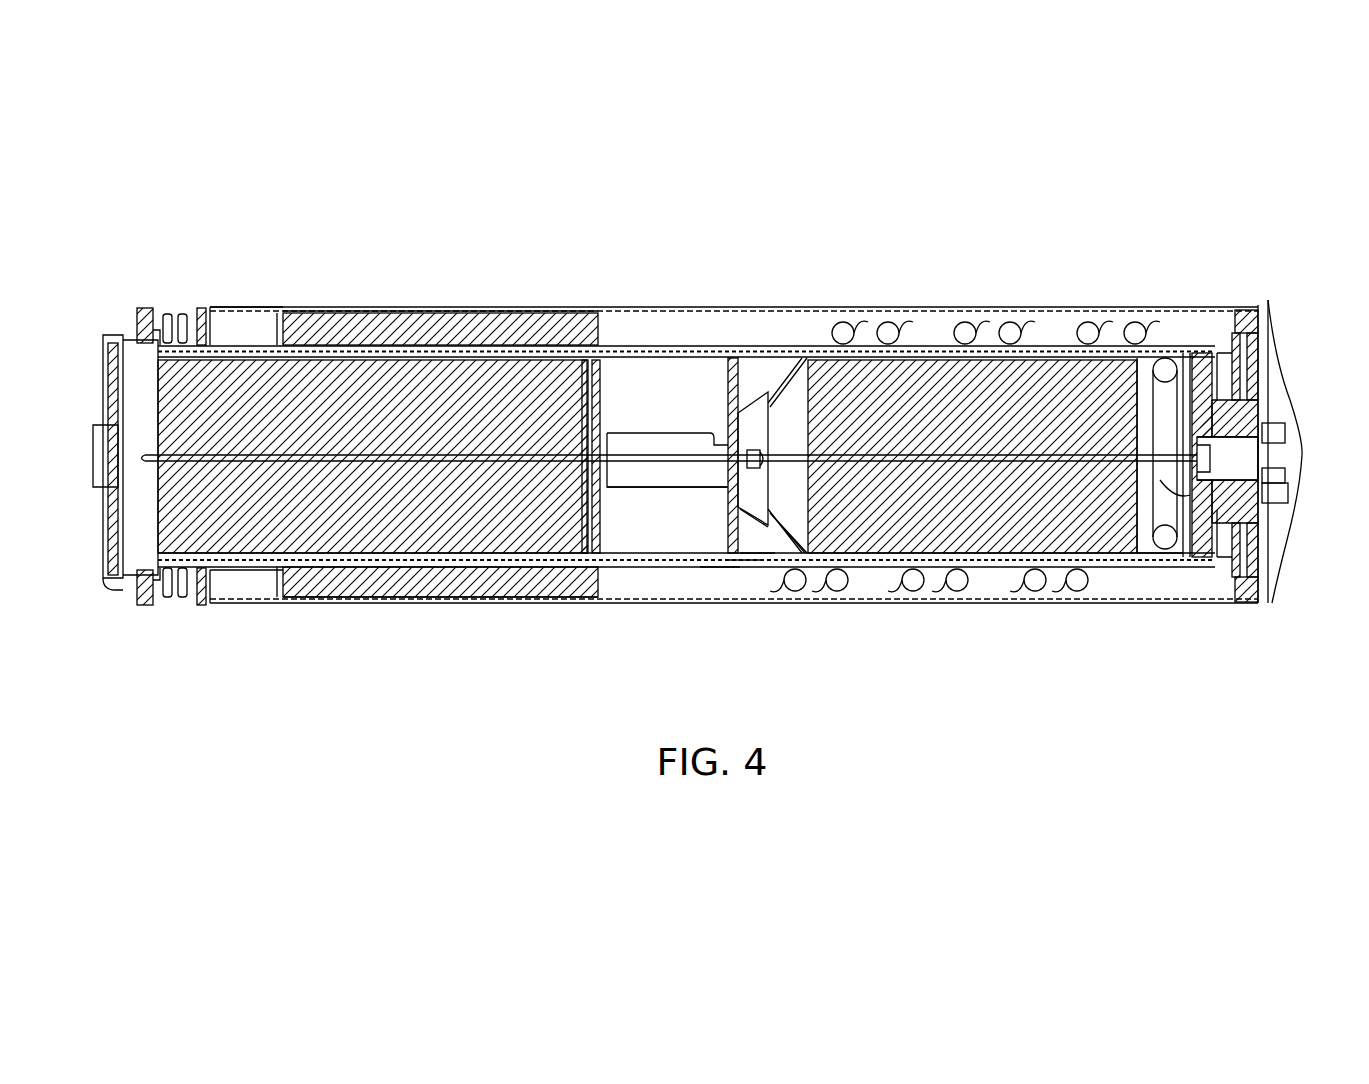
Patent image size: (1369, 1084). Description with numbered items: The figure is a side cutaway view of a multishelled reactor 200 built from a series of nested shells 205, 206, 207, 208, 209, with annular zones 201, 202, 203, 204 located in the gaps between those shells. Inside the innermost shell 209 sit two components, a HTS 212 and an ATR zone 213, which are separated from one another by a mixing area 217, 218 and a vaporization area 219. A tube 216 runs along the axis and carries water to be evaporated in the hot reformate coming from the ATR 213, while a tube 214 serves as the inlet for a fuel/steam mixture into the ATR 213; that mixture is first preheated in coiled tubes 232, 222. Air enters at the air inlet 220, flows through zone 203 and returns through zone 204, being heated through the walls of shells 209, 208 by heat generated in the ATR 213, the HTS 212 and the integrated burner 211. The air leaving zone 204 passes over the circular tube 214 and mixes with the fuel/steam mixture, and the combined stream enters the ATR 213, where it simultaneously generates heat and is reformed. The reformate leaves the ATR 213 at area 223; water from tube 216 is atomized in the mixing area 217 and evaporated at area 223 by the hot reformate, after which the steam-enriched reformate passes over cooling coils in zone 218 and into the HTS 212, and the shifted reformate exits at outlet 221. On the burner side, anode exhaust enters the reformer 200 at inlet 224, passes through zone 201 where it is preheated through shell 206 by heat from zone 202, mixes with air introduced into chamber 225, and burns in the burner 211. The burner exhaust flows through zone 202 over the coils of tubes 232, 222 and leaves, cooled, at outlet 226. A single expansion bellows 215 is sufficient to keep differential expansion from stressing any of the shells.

The reactor 200 is at (342, 679).
The annular zone 201 is at (628, 310).
The annular zone 202 is at (686, 325).
The annular zone 203 is at (723, 355).
The annular zone 204 is at (768, 345).
The shell 205 is at (635, 605).
The shell 206 is at (682, 597).
The shell 207 is at (713, 568).
The shell 208 is at (737, 567).
The shell 209 is at (752, 567).
The integrated burner 211 is at (360, 327).
The HTS 212 is at (459, 380).
The ATR zone 213 is at (941, 390).
The tube 214 is at (1165, 370).
The expansion bellows 215 is at (170, 320).
The tube 216 is at (395, 457).
The mixing area 217 is at (667, 460).
The mixing area 218 is at (667, 512).
The vaporization area 219 is at (752, 487).
The air inlet 220 is at (1260, 460).
The outlet 221 is at (85, 457).
The coiled tube 222 is at (1135, 333).
The area 223 is at (798, 483).
The inlet 224 is at (1238, 310).
The chamber 225 is at (234, 315).
The outlet 226 is at (1283, 554).
The coiled tube 232 is at (1088, 333).